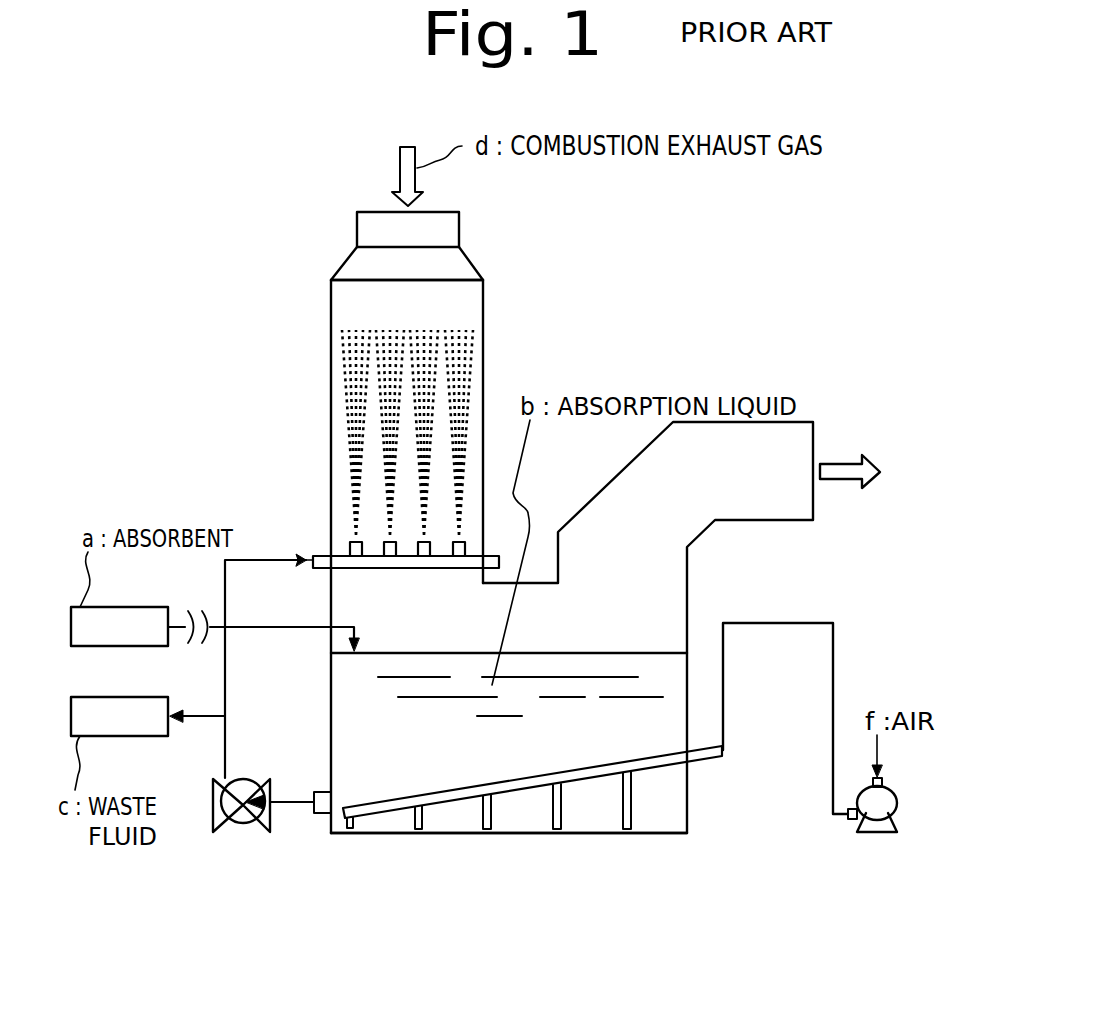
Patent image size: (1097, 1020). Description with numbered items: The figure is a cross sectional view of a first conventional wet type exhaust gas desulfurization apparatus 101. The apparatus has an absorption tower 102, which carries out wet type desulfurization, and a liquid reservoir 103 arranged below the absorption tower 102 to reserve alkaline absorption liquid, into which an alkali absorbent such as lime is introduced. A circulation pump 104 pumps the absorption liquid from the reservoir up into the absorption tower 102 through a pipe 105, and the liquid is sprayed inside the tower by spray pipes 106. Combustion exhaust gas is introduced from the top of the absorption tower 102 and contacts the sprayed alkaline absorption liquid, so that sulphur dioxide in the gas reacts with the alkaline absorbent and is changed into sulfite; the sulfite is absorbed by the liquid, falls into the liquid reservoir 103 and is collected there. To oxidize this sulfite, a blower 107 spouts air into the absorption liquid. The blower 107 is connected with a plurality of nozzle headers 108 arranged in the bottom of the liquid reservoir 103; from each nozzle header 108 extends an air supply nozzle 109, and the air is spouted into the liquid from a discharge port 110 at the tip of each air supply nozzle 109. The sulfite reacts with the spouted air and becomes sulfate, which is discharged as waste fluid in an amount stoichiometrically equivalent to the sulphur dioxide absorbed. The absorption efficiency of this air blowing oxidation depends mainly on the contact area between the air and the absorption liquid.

The wet type exhaust gas desulfurization apparatus 101 is at (749, 281).
The absorption tower 102 is at (483, 312).
The liquid reservoir 103 is at (383, 833).
The circulation pump 104 is at (242, 823).
The pipe 105 is at (222, 750).
The spray pipes 106 is at (320, 552).
The blower 107 is at (876, 813).
The nozzle headers 108 is at (513, 787).
The air supply nozzle 109 is at (633, 807).
The discharge port 110 is at (545, 833).